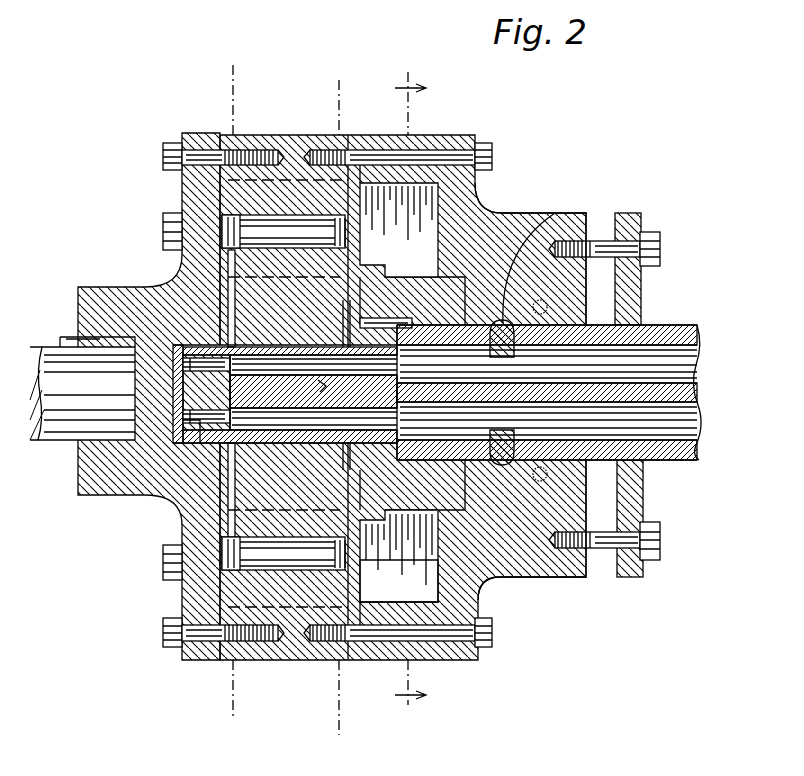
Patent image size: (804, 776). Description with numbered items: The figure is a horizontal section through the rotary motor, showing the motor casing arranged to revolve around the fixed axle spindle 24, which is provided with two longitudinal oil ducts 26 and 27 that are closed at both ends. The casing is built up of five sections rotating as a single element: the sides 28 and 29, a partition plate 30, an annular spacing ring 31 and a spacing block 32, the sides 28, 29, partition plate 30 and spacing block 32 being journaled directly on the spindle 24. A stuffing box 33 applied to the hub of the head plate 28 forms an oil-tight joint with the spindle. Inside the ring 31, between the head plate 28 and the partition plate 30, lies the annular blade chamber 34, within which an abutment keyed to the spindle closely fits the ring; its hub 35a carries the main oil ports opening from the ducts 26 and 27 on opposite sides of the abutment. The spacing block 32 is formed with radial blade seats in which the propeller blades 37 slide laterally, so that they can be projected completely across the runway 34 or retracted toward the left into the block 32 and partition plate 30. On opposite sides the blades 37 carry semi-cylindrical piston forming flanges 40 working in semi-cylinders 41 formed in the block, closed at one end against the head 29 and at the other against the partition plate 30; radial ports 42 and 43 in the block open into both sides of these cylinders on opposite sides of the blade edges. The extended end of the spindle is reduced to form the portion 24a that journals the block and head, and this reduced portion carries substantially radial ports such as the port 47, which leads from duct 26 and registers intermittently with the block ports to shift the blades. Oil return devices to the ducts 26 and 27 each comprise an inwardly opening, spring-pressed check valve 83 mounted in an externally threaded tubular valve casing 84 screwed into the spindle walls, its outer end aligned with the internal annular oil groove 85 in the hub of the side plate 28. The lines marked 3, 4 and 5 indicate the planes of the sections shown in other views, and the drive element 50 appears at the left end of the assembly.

The section line 3- 3 is at (410, 392).
The section line 4- 4 is at (339, 406).
The section line 5- 5 is at (233, 392).
The fixed axle spindle 24 is at (689, 322).
The reduced portion 24a is at (194, 456).
The oil duct 26 is at (683, 377).
The oil duct 27 is at (718, 436).
The side 28 is at (497, 227).
The side 29 is at (185, 188).
The partition plate 30 is at (350, 135).
The annular spacing ring 31 is at (428, 135).
The spacing block 32 is at (275, 135).
The stuffing box 33 is at (641, 306).
The annular blade chamber 34 is at (425, 583).
The hub 35a is at (525, 222).
The propeller blades 37 is at (412, 212).
The piston forming flanges 40 is at (166, 598).
The semi-cylinders 41 is at (225, 236).
The radial port 42 is at (228, 487).
The radial port 43 is at (340, 470).
The radial port 47 is at (323, 390).
The drive shaft 50 is at (63, 450).
The check valve 83 is at (513, 323).
The tubular valve casing 84 is at (525, 317).
The internal annular oil groove 85 is at (575, 254).